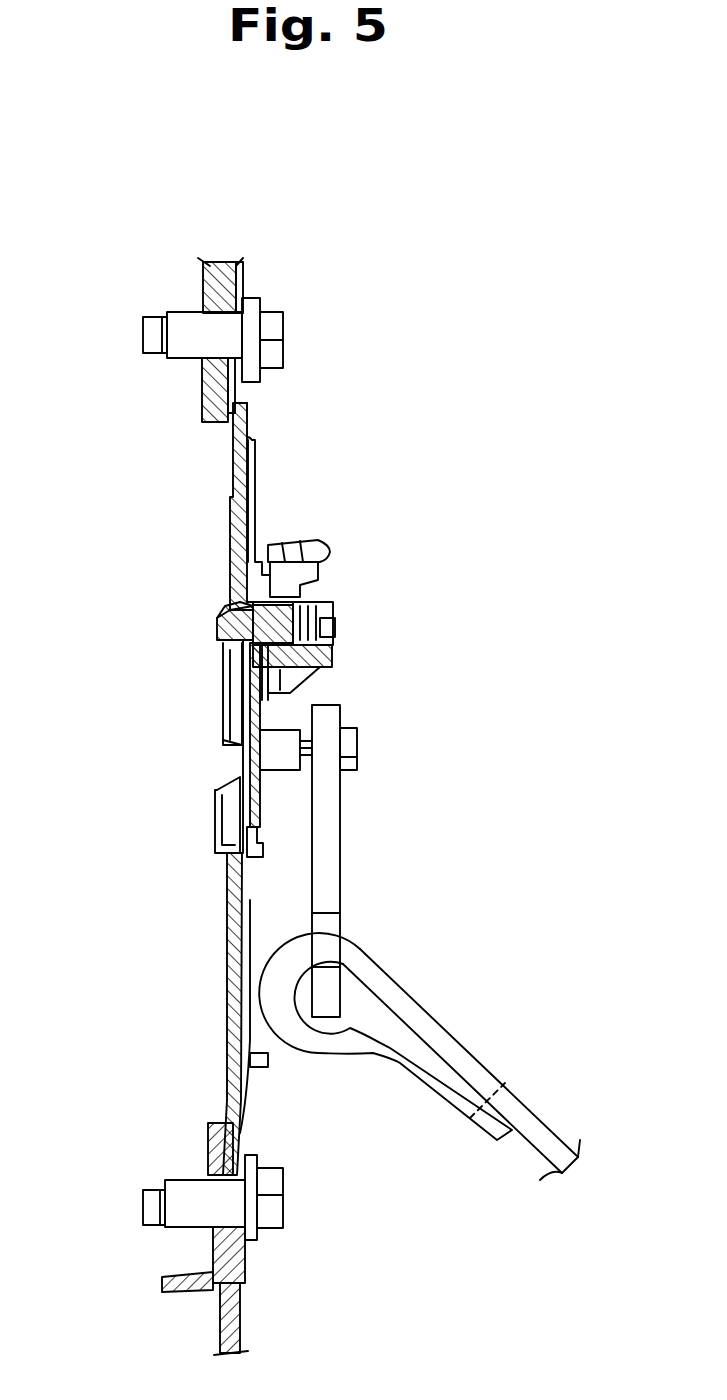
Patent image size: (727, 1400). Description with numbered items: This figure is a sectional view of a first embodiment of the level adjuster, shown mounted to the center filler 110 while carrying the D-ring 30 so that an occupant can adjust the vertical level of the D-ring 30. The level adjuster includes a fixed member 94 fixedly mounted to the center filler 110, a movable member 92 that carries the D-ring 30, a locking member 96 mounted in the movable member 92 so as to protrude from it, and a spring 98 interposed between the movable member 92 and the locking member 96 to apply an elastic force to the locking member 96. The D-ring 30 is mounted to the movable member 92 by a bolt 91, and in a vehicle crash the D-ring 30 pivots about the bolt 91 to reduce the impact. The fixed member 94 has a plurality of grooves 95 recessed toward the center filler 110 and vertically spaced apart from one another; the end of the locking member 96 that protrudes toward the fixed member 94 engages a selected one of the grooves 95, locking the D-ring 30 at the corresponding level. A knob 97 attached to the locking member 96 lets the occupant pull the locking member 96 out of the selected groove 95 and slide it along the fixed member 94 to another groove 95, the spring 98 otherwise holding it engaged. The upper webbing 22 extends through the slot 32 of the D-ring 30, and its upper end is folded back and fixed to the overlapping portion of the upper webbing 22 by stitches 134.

The center filler 110 is at (218, 287).
The bolt 91 is at (284, 337).
The fixed member 94 is at (250, 403).
The knob 97 is at (322, 552).
The spring 98 is at (322, 600).
The locking member 96 is at (237, 627).
The movable member 92 is at (333, 651).
The grooves 95 is at (228, 713).
The D-ring 30 is at (328, 815).
The slot 32 is at (327, 920).
The upper webbing 22 is at (533, 1107).
The stitches 134 is at (498, 1085).